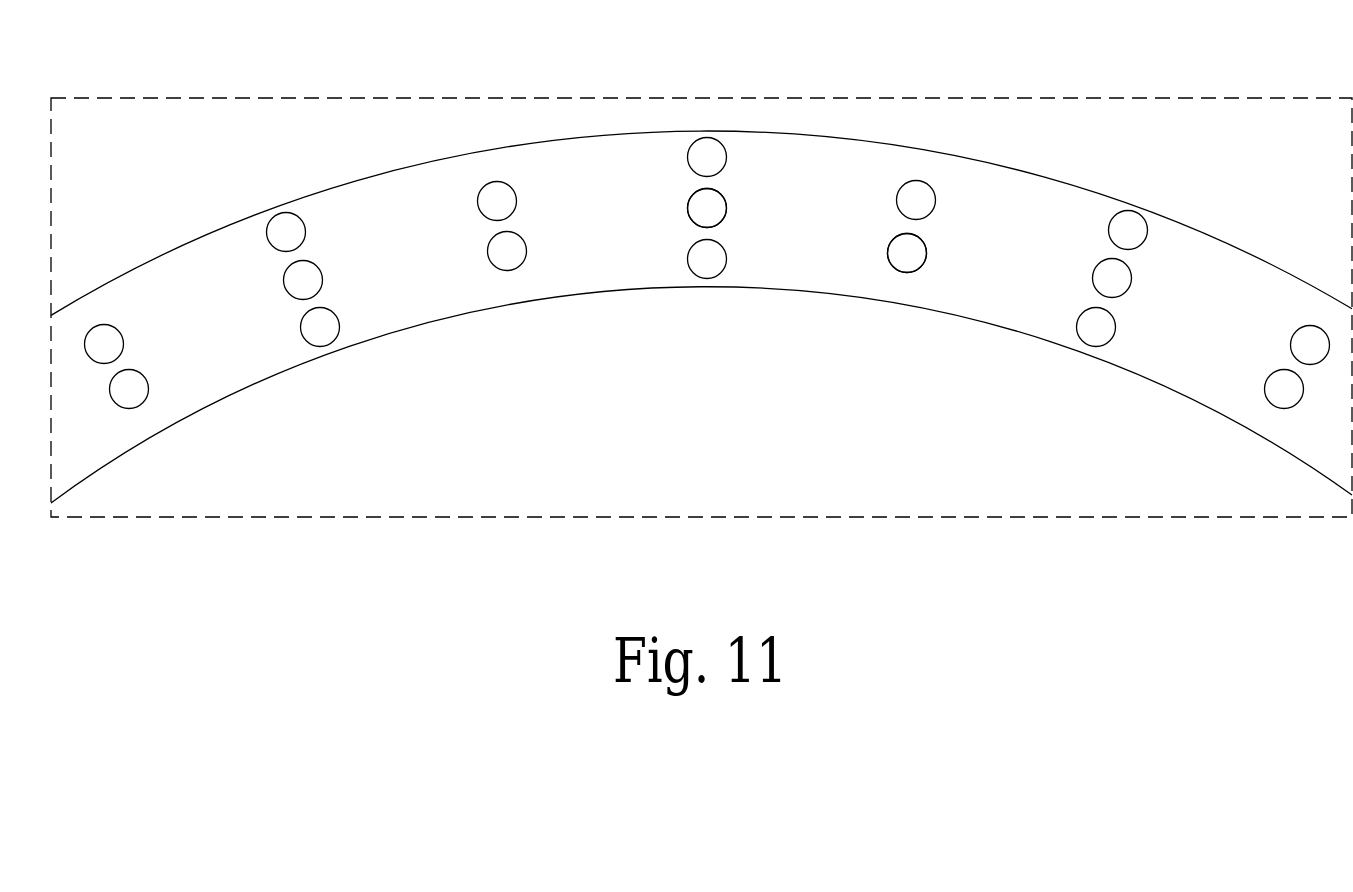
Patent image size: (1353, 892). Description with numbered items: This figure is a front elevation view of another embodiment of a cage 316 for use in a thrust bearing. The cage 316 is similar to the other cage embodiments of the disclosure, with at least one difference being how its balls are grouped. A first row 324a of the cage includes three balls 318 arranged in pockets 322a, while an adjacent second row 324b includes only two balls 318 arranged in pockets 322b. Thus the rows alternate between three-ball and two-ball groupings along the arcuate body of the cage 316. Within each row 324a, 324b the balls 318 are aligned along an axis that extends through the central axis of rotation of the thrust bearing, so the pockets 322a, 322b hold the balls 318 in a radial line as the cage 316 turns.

The cage 316 is at (1142, 192).
The ball 318 is at (889, 238).
The pockets 322a is at (688, 157).
The pockets 322b is at (936, 203).
The first row 324a is at (707, 290).
The second row 324b is at (900, 298).